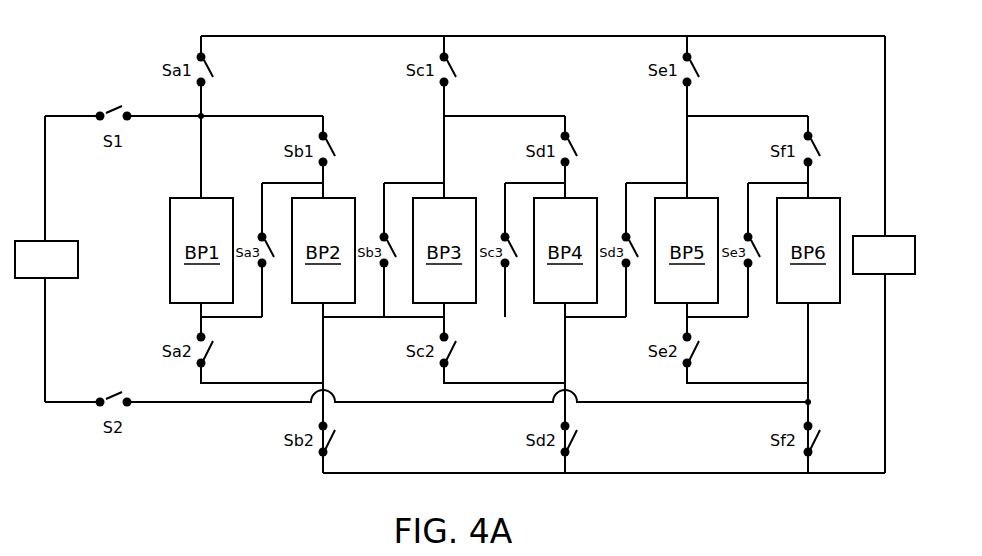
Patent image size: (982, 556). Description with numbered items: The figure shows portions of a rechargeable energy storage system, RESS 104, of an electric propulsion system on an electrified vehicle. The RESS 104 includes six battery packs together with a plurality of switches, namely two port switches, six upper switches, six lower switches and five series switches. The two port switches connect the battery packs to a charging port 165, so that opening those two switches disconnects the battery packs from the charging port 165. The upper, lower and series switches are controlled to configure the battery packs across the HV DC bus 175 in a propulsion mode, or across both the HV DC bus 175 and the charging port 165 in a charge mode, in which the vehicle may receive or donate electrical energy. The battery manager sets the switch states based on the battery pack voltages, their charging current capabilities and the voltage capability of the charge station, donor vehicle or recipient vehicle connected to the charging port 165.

The RESS 104 is at (532, 26).
The charging port 165 is at (30, 270).
The HV DC bus 175 is at (868, 266).